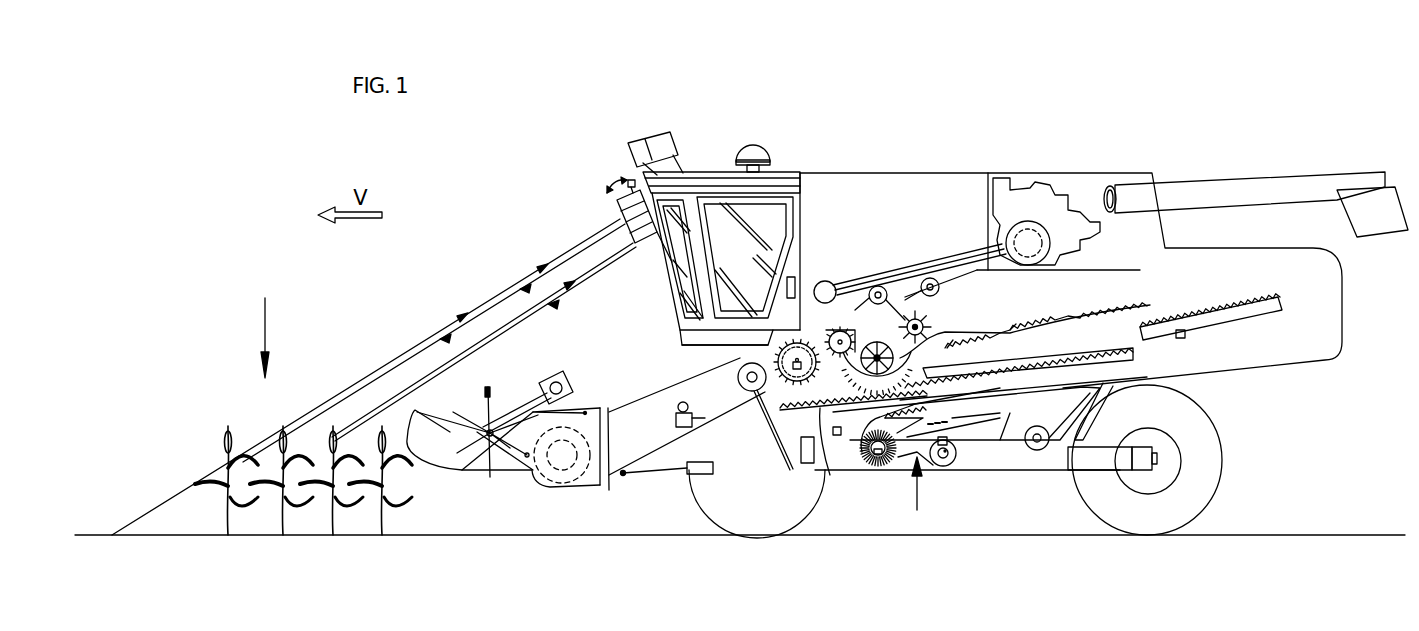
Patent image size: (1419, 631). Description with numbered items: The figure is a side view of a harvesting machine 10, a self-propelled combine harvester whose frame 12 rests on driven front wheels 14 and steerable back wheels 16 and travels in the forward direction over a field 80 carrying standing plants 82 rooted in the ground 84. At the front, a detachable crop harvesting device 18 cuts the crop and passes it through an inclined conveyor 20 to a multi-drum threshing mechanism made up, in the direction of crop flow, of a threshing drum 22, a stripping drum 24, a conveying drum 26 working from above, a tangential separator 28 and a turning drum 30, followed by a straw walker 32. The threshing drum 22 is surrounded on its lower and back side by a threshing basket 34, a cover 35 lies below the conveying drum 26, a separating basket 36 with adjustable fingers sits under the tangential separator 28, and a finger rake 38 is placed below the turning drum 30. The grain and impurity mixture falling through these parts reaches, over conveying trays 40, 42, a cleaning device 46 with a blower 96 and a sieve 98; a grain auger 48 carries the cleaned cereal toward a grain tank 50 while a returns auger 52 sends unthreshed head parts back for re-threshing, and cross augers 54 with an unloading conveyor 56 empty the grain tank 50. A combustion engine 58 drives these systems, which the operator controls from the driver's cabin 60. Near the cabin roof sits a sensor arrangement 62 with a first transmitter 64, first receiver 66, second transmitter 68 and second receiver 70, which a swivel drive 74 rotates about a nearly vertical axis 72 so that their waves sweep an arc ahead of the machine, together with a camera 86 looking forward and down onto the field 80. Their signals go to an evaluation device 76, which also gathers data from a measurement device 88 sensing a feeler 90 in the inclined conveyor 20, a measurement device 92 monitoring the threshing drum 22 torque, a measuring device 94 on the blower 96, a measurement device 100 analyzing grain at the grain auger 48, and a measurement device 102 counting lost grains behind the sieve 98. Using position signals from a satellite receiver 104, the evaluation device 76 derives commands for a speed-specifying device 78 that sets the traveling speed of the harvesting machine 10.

The harvesting machine 10 is at (920, 143).
The frame 12 is at (997, 472).
The front wheels 14 is at (768, 494).
The back wheels 16 is at (1212, 472).
The crop harvesting device 18 is at (566, 489).
The inclined conveyor 20 is at (631, 432).
The threshing drum 22 is at (776, 362).
The stripping drum 24 is at (815, 335).
The conveying drum 26 is at (823, 280).
The tangential separator 28 is at (872, 286).
The turning drum 30 is at (932, 327).
The straw walker 32 is at (1107, 330).
The threshing basket 34 is at (752, 393).
The cover 35 is at (867, 372).
The separating basket 36 is at (1100, 343).
The finger rake 38 is at (1000, 334).
The conveying tray 40 is at (836, 435).
The conveying tray 42 is at (1090, 363).
The cleaning device 46 is at (917, 495).
The grain auger 48 is at (950, 467).
The grain tank 50 is at (863, 207).
The returns auger 52 is at (1045, 451).
The cross augers 54 is at (912, 275).
The unloading conveyor 56 is at (1253, 190).
The combustion engine 58 is at (1030, 185).
The driver's cabin 60 is at (718, 263).
The sensor arrangement 62 is at (397, 275).
The first transmitter 64 is at (648, 236).
The first receiver 66 is at (633, 245).
The second transmitter 68 is at (624, 221).
The second receiver 70 is at (611, 192).
The axis 72 is at (627, 182).
The swivel drive 74 is at (620, 178).
The evaluation device 76 is at (797, 282).
The speed-specifying device 78 is at (881, 468).
The field 80 is at (265, 326).
The plants 82 is at (222, 535).
The ground 84 is at (185, 535).
The camera 86 is at (672, 140).
The measurement device 88 is at (660, 472).
The feeler 90 is at (694, 475).
The measurement device 92 is at (740, 380).
The measuring device 94 is at (889, 463).
The blower 96 is at (902, 463).
The sieve 98 is at (1010, 413).
The measurement device 100 is at (953, 442).
The measurement device 102 is at (1055, 413).
The receiver 104 is at (757, 148).